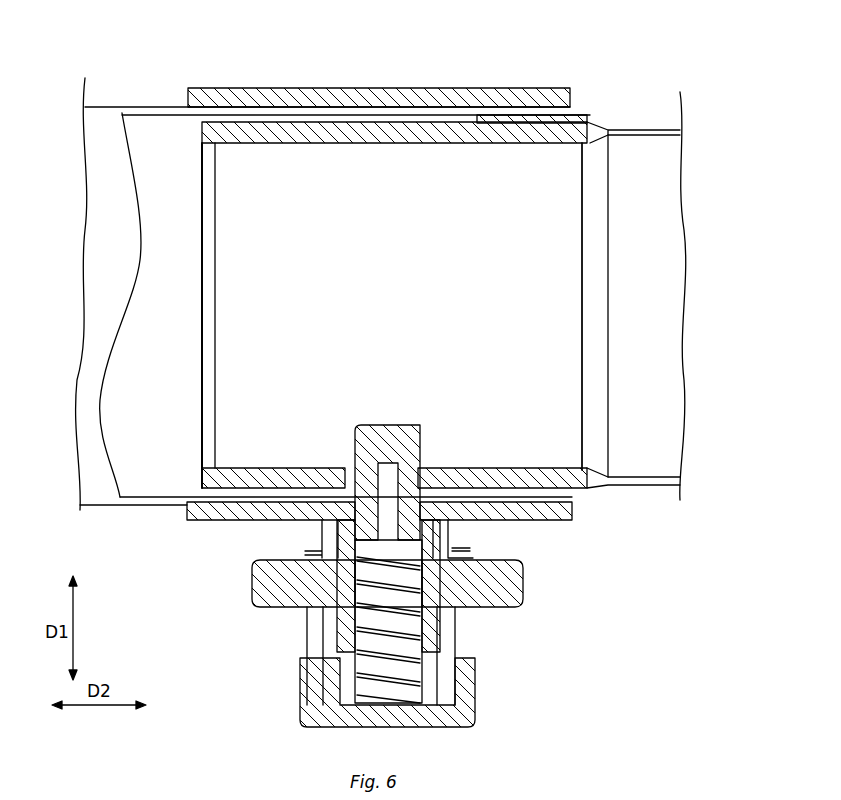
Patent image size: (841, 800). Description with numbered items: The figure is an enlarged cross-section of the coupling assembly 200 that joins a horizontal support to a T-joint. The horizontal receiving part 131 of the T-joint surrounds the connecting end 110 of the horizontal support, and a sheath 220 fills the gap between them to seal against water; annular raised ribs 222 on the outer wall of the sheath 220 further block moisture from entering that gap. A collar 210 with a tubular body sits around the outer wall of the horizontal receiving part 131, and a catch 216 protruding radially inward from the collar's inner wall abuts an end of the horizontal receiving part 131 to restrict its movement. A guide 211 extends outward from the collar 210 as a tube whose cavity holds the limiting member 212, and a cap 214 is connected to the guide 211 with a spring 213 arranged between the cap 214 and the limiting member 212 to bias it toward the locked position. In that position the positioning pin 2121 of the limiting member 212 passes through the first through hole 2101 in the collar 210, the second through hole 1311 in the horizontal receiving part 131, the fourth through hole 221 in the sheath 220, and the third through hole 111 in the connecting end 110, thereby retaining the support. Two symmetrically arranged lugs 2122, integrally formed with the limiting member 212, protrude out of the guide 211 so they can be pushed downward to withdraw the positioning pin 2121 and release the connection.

The horizontal receiving part 131 is at (143, 107).
The coupling assembly 200 is at (285, 62).
The collar 210 is at (337, 88).
The annular raised ribs 222 is at (478, 113).
The catch 216 is at (565, 107).
The sheath 220 is at (250, 143).
The connecting end 110 is at (455, 145).
The third through hole 111 is at (345, 467).
The positioning pin 2121 is at (400, 427).
The fourth through hole 221 is at (560, 462).
The first through hole 2101 is at (345, 512).
The second through hole 1311 is at (470, 518).
The lugs 2122 is at (250, 590).
The guide 211 is at (523, 560).
The limiting member 212 is at (520, 598).
The spring 213 is at (400, 630).
The cap 214 is at (300, 690).